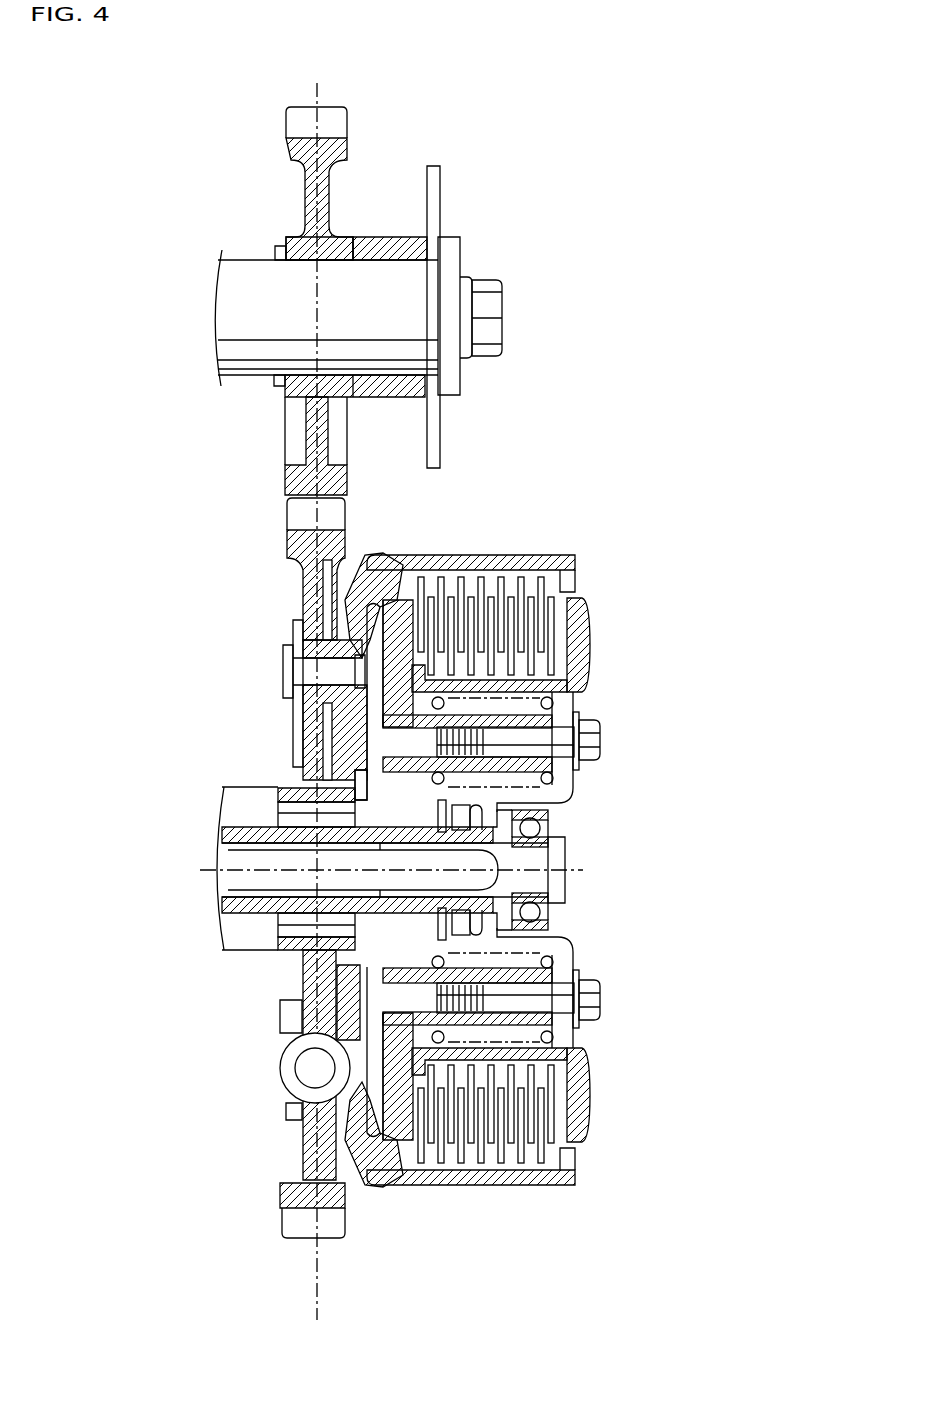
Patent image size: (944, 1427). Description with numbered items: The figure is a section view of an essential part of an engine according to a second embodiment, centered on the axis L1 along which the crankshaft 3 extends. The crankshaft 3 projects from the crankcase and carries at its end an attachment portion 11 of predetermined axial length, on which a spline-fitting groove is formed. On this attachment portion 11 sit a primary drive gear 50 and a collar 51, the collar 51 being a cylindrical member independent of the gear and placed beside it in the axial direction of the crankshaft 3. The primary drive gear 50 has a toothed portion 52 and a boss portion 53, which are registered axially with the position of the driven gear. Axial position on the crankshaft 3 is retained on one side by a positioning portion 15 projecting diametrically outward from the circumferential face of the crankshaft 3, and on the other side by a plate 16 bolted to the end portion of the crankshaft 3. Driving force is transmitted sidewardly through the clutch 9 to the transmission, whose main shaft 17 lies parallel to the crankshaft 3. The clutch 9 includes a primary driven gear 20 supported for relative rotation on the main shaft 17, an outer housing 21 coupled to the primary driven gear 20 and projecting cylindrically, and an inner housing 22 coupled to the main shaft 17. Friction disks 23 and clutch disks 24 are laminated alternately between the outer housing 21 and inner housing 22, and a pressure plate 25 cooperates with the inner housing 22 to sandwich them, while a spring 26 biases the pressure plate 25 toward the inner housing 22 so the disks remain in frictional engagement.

The axis line L1 is at (304, 96).
The crankshaft 3 is at (230, 255).
The clutch 9 is at (525, 591).
The attachment portion 11 is at (258, 274).
The positioning portion 15 is at (278, 387).
The plate 16 is at (438, 442).
The main shaft 17 is at (258, 791).
The primary driven gear 20 is at (349, 538).
The outer housing 21 is at (539, 556).
The inner housing 22 is at (402, 622).
The friction disks 23 is at (545, 585).
The clutch disks 24 is at (561, 658).
The pressure plate 25 is at (592, 645).
The spring 26 is at (500, 780).
The primary drive gear 50 is at (364, 274).
The collar 51 is at (404, 241).
The toothed portion 52 is at (341, 118).
The boss portion 53 is at (348, 218).